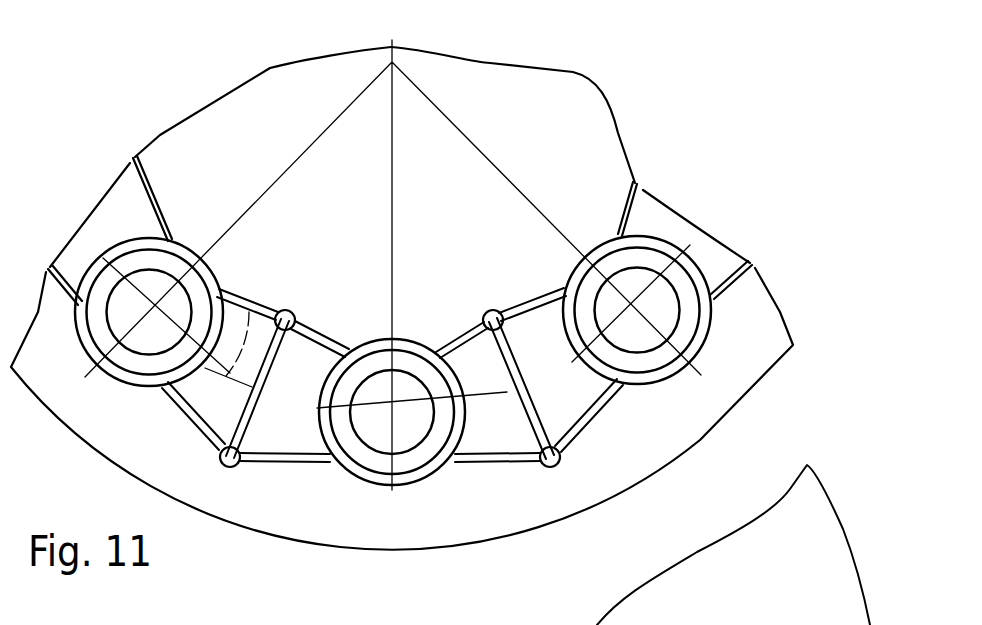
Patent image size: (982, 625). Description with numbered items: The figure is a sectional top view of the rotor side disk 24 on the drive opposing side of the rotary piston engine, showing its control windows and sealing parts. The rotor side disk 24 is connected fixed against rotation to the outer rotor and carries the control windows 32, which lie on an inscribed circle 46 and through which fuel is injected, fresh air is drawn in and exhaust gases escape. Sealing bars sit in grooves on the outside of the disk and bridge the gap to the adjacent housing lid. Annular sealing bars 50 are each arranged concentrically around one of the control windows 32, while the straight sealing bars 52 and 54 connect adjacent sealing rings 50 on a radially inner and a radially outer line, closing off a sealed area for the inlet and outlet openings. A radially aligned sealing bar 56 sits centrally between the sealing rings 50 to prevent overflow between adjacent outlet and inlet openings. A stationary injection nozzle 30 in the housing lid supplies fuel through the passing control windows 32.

The rotor side disk 24 is at (557, 137).
The annular sealing bar 50 is at (180, 247).
The control window 32 is at (640, 338).
The inscribed circle 46 is at (260, 310).
The straight sealing bar 52 is at (518, 310).
The sealing bar 56 is at (517, 363).
The straight sealing bar 54 is at (578, 435).
The injection nozzle 30 is at (757, 624).